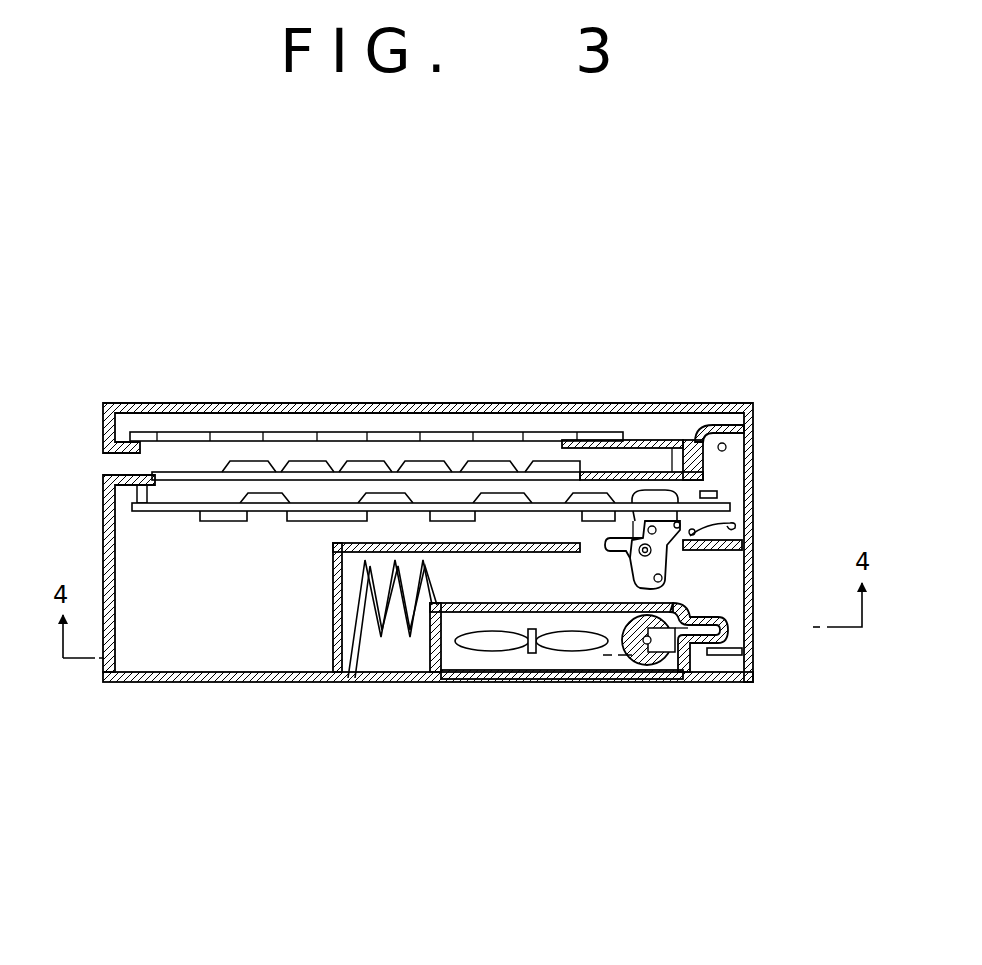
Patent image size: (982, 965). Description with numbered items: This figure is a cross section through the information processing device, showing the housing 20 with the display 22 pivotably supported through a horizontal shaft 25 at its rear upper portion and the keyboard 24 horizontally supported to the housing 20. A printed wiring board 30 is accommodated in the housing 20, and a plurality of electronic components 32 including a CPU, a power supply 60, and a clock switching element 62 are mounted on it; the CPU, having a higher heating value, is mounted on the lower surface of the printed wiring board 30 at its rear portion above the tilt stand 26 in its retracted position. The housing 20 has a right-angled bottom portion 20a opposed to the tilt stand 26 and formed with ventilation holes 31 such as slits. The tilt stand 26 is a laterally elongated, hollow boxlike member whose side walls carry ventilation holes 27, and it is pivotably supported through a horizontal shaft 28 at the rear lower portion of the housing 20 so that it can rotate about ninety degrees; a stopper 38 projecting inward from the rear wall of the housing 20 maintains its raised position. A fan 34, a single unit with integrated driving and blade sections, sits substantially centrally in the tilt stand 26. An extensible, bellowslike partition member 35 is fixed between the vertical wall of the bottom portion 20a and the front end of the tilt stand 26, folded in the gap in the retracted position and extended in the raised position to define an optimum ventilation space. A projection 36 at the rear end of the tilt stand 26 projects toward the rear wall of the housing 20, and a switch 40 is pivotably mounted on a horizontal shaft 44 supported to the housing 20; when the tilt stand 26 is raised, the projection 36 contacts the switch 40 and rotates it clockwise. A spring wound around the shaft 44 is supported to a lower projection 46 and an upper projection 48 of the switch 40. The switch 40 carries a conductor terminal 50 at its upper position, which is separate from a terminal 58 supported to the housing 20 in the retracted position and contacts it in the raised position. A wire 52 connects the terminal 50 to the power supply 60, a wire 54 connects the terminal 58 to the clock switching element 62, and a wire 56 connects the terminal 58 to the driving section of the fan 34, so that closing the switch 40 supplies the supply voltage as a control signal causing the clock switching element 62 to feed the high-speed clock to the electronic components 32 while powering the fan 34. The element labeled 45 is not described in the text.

The housing 20 is at (363, 400).
The right-angled bottom portion 20a is at (437, 543).
The display 22 is at (180, 432).
The keyboard 24 is at (296, 462).
The horizontal shaft 25 is at (722, 440).
The tilt stand 26 is at (472, 687).
The ventilation holes 27 is at (537, 602).
The horizontal shaft 28 is at (633, 668).
The printed wiring board 30 is at (153, 512).
The ventilation holes 31 is at (391, 543).
The electronic components 32 is at (205, 525).
The fan 34 is at (473, 650).
The extensible partition member 35 is at (337, 613).
The projection 36 is at (697, 650).
The stopper 38 is at (727, 655).
The switch 40 is at (627, 573).
The horizontal shaft 44 is at (633, 556).
The lever end 45 is at (637, 587).
The lower projection 46 is at (653, 665).
The upper projection 48 is at (653, 520).
The terminal 50 is at (675, 557).
The wire 52 is at (670, 490).
The wire 54 is at (723, 495).
The wire 56 is at (733, 527).
The terminal 58 is at (707, 547).
The power supply 60 is at (578, 497).
The clock switching element 62 is at (707, 483).